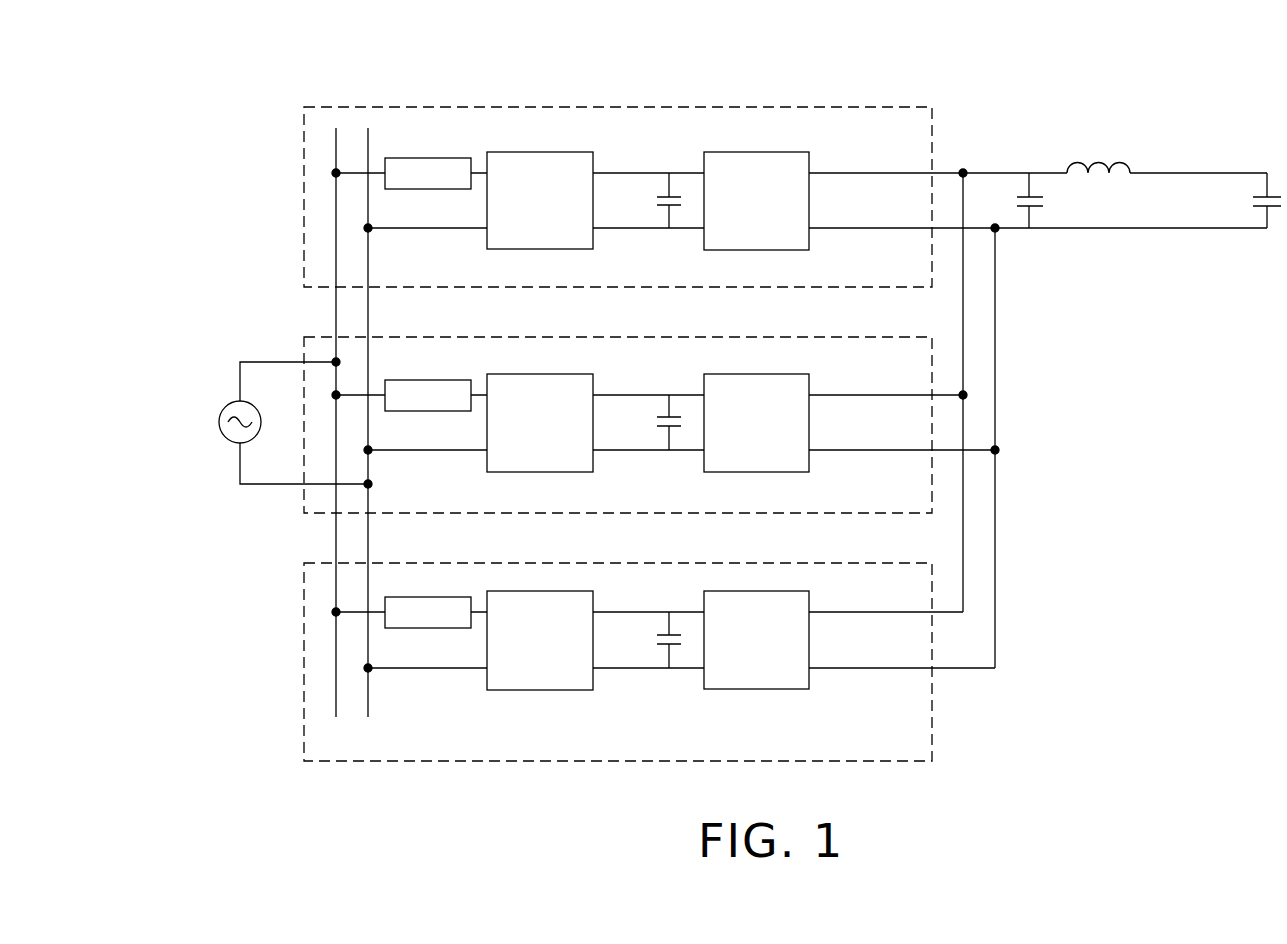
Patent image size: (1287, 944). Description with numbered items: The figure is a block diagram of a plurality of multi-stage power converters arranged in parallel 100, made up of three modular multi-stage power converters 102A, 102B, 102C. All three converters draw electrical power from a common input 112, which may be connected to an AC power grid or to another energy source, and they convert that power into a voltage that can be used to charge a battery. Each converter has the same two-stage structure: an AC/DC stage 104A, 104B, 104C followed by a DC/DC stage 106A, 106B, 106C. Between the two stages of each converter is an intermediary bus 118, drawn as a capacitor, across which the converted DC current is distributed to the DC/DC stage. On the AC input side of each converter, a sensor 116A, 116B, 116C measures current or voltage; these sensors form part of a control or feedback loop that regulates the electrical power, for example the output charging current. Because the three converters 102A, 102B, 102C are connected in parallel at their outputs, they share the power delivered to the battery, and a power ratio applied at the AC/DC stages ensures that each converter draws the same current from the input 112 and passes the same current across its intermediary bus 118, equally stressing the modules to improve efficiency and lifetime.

The plurality of multi-stage power converters arranged in parallel 100 is at (168, 108).
The multi-stage power converter 102A is at (618, 197).
The multi-stage power converter 102B is at (618, 425).
The multi-stage power converter 102C is at (618, 662).
The AC/DC stage 104A is at (540, 200).
The AC/DC stage 104B is at (540, 423).
The AC/DC stage 104C is at (540, 640).
The DC/DC stage 106A is at (756, 201).
The DC/DC stage 106B is at (756, 423).
The DC/DC stage 106C is at (756, 640).
The input 112 is at (233, 442).
The sensor 116A is at (448, 190).
The sensor 116B is at (448, 412).
The sensor 116C is at (448, 629).
The intermediary bus 118 is at (620, 173).